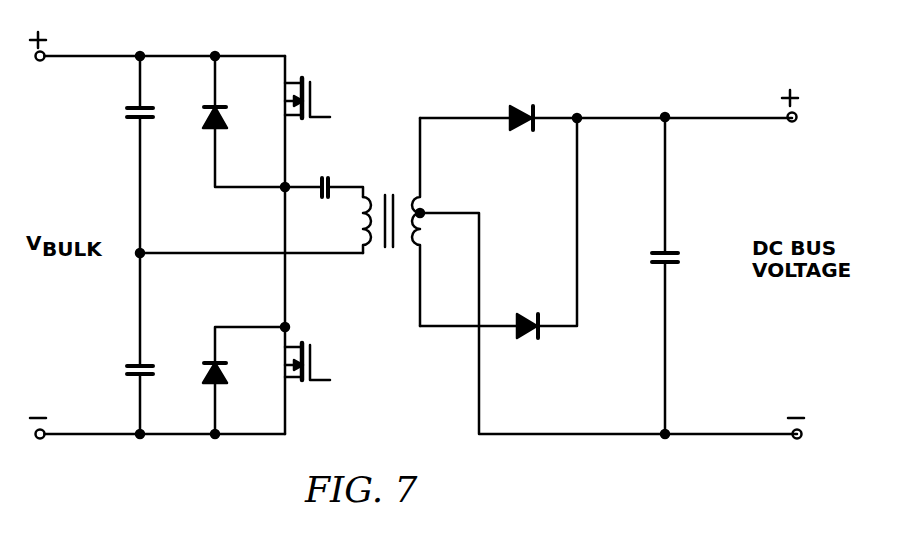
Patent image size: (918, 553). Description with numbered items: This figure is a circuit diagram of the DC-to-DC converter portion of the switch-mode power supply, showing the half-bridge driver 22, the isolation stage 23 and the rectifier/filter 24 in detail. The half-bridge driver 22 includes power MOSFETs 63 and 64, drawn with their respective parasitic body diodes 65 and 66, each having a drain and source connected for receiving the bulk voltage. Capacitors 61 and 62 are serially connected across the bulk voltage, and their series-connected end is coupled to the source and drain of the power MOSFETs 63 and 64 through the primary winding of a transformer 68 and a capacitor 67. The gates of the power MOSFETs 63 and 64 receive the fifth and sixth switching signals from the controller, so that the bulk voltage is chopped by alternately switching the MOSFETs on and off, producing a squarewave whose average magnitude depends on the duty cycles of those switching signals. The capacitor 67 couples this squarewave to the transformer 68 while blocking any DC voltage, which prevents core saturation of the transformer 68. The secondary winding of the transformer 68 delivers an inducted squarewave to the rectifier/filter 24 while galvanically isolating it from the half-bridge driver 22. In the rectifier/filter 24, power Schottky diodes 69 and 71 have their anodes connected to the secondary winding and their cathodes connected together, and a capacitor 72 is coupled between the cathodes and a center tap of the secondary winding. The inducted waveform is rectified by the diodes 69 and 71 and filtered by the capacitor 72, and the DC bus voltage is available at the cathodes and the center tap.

The half-bridge driver 22 is at (262, 229).
The isolation stage 23 is at (405, 170).
The rectifier/filter 24 is at (624, 372).
The capacitor 61 is at (130, 108).
The capacitor 62 is at (129, 366).
The power MOSFET 63 is at (320, 66).
The power MOSFET 64 is at (328, 328).
The parasitic body diode 65 is at (222, 107).
The parasitic body diode 66 is at (206, 363).
The capacitor 67 is at (330, 198).
The transformer 68 is at (395, 248).
The power Schottky diode 69 is at (545, 80).
The power Schottky diode 71 is at (540, 334).
The capacitor 72 is at (670, 253).